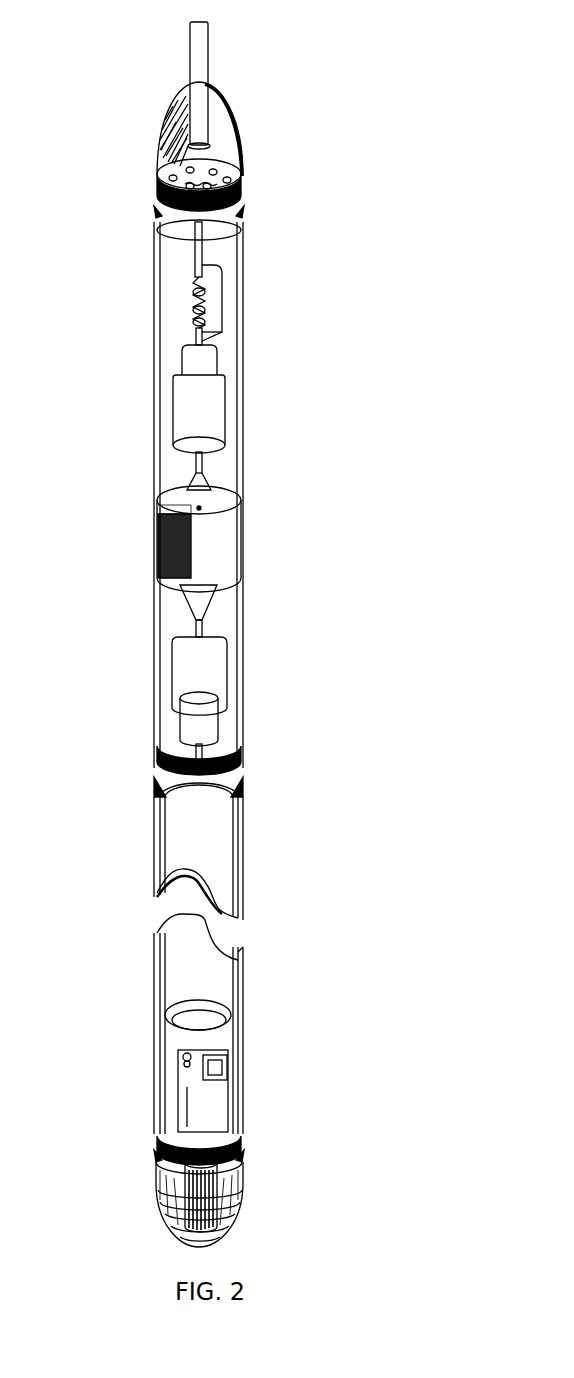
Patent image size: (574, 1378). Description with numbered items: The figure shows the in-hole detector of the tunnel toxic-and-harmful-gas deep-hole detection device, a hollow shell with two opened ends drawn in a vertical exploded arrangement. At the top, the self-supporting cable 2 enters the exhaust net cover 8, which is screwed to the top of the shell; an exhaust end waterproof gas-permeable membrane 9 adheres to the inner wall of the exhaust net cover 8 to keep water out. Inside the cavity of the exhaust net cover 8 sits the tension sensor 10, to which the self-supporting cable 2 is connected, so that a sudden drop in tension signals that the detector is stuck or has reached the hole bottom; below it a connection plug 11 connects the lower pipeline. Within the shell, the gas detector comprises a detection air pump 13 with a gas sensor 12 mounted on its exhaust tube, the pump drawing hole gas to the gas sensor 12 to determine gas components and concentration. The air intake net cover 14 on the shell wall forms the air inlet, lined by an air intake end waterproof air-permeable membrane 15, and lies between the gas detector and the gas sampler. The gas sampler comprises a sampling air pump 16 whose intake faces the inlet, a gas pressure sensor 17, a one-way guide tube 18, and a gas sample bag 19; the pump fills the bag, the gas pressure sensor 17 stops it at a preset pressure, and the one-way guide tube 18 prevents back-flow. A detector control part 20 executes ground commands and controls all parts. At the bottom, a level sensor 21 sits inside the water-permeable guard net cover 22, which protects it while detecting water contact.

The self-supporting cable 2 is at (199, 80).
The exhaust net cover 8 is at (158, 133).
The exhaust end waterproof gas-permeable membrane 9 is at (231, 110).
The tension sensor 10 is at (213, 147).
The connection plug 11 is at (158, 208).
The gas sensor 12 is at (192, 295).
The detection air pump 13 is at (215, 387).
The air intake net cover 14 is at (157, 530).
The air intake end waterproof air-permeable membrane 15 is at (240, 527).
The sampling air pump 16 is at (178, 668).
The gas pressure sensor 17 is at (220, 748).
The one-way guide tube 18 is at (158, 753).
The gas sample bag 19 is at (223, 865).
The detector control part 20 is at (185, 1075).
The level sensor 21 is at (168, 1158).
The guard net cover 22 is at (243, 1192).